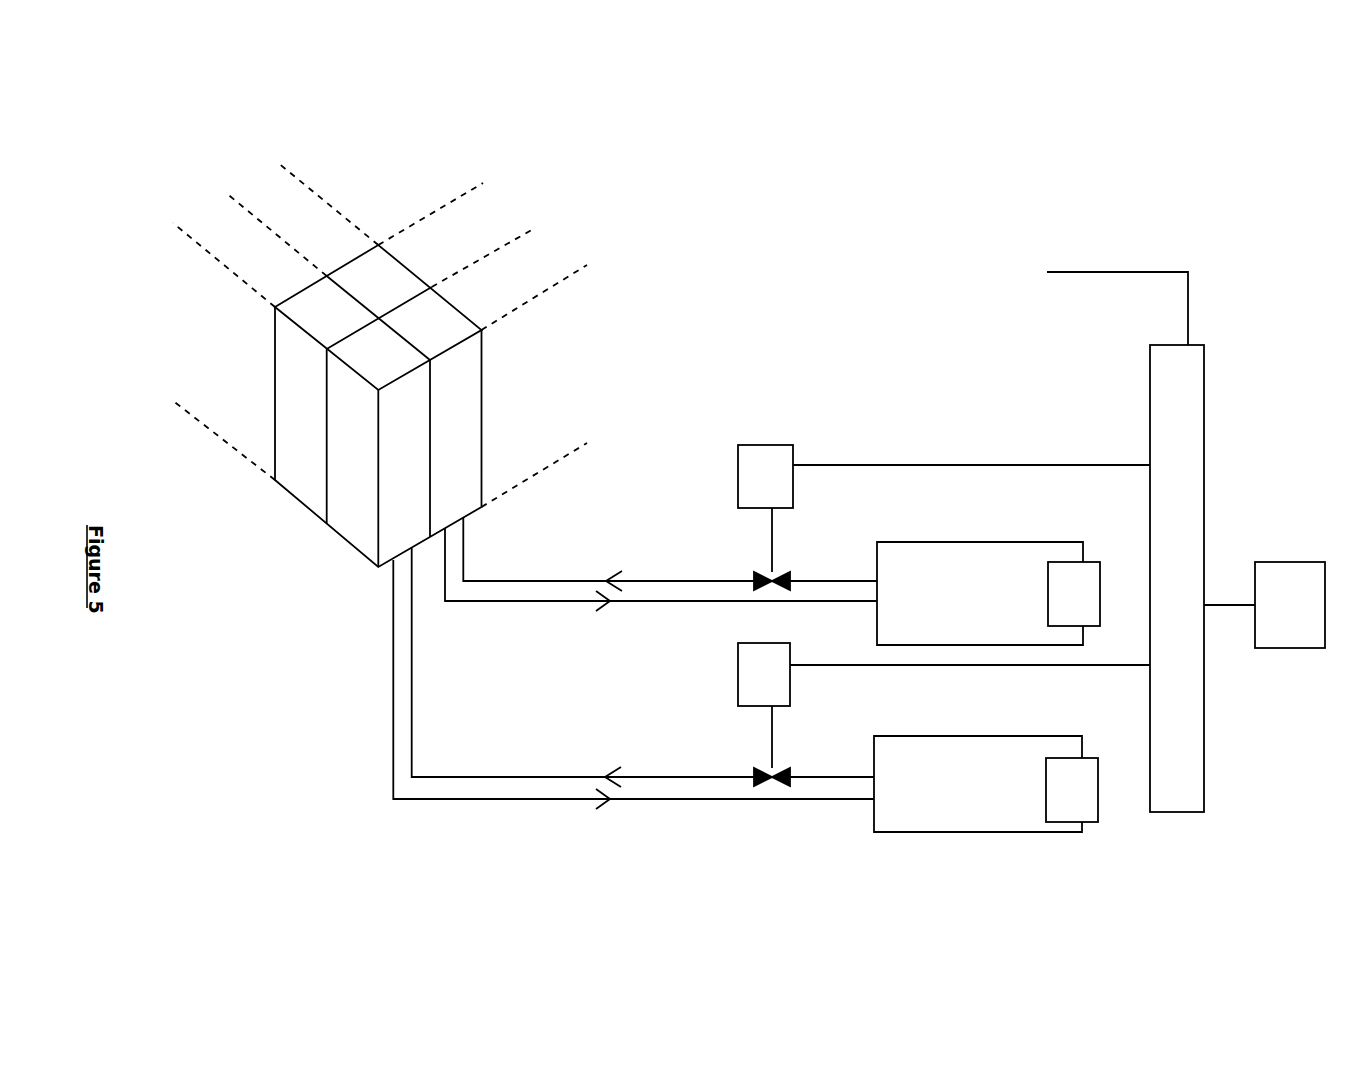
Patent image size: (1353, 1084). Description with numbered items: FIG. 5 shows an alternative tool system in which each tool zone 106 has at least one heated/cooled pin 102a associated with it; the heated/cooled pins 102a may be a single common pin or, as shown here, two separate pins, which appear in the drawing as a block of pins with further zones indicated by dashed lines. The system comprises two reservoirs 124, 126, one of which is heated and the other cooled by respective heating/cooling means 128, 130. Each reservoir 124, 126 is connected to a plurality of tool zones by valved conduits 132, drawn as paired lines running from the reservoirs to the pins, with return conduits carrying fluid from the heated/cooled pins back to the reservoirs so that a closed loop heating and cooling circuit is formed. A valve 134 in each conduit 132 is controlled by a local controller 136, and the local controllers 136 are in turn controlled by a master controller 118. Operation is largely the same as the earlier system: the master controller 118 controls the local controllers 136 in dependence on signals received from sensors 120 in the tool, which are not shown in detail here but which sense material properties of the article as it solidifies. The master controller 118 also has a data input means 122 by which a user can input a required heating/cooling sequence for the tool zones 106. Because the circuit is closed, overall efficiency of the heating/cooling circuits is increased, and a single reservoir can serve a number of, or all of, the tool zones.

The heated/cooled pin 102a is at (470, 413).
The tool zone 106 is at (503, 273).
The master controller 118 is at (1207, 468).
The sensors 120 is at (1047, 272).
The data input means 122 is at (1273, 600).
The reservoir 124 is at (936, 602).
The reservoir 126 is at (935, 785).
The heating/cooling means 128 is at (1055, 602).
The heating/cooling means 130 is at (1055, 800).
The valved conduit 132 is at (833, 577).
The valve 134 is at (757, 573).
The local controller 136 is at (748, 486).